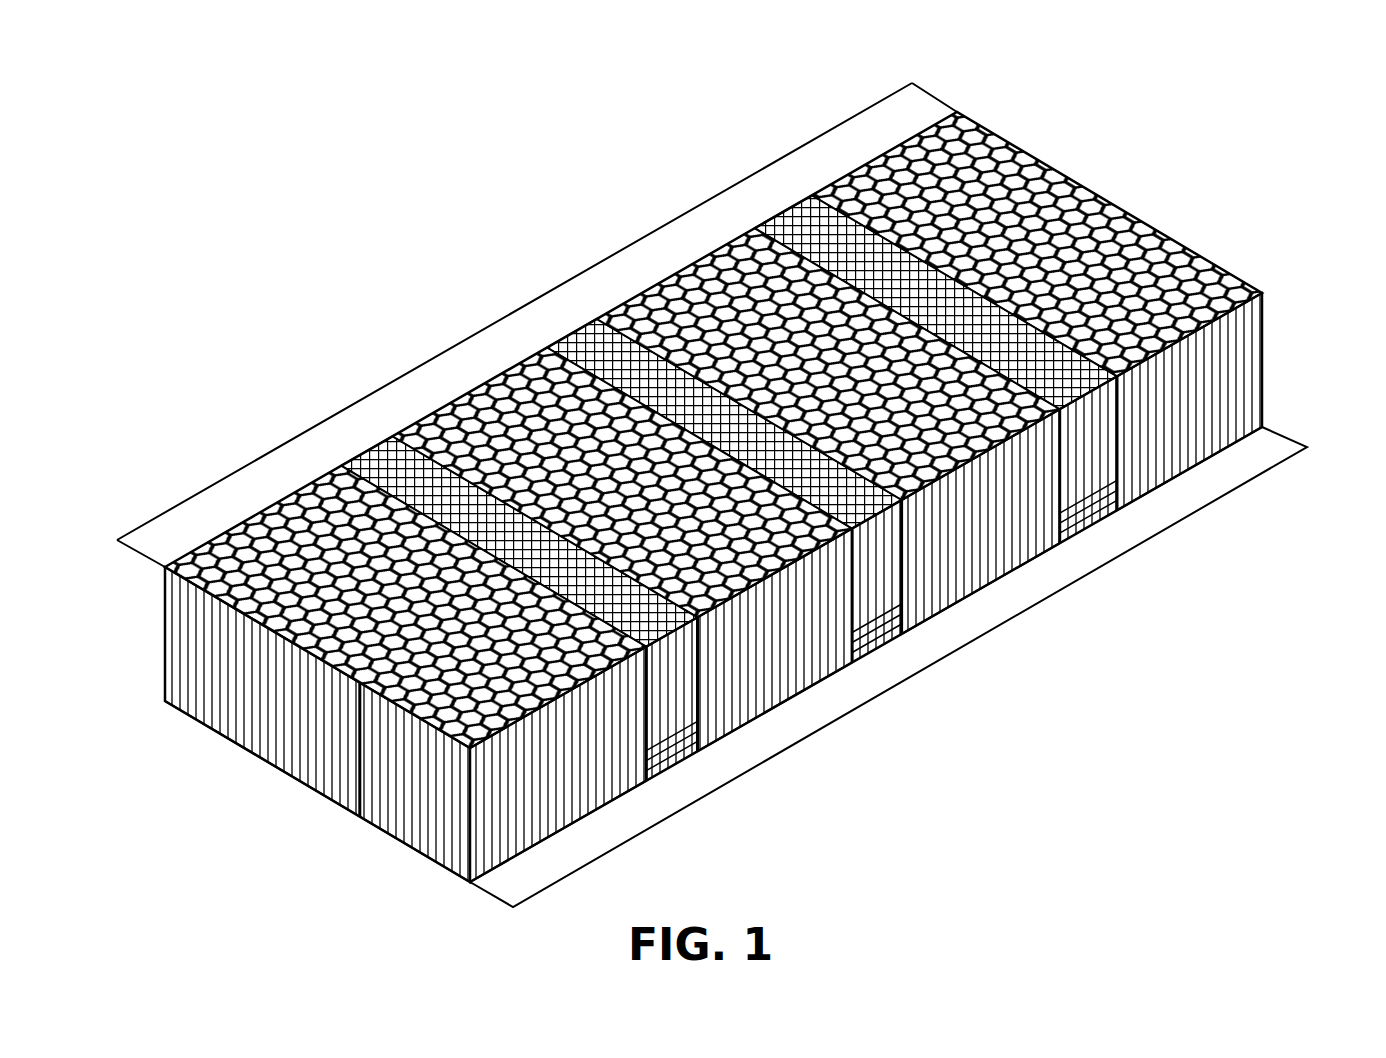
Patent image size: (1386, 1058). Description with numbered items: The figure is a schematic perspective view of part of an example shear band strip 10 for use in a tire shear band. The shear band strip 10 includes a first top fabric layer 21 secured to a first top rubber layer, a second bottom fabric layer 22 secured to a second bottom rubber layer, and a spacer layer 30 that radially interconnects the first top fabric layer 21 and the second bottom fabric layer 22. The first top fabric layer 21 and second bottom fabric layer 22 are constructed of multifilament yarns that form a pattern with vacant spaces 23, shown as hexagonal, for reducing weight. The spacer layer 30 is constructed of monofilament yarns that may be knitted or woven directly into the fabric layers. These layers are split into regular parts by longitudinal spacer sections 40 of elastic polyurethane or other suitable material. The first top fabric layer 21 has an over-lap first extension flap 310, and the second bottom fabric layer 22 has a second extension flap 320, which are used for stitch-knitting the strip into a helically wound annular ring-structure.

The shear band strip 10 is at (1092, 110).
The first top fabric layer 21 is at (285, 533).
The second bottom fabric layer 22 is at (945, 618).
The vacant spaces 23 is at (356, 685).
The spacer layer 30 is at (788, 660).
The longitudinal spacer sections 40 is at (343, 456).
The first extension flap 310 is at (914, 93).
The second extension flap 320 is at (1268, 433).